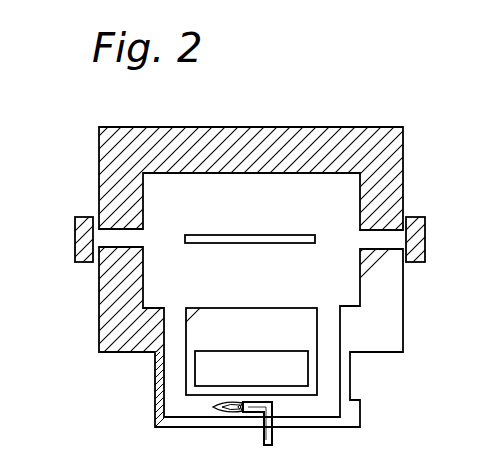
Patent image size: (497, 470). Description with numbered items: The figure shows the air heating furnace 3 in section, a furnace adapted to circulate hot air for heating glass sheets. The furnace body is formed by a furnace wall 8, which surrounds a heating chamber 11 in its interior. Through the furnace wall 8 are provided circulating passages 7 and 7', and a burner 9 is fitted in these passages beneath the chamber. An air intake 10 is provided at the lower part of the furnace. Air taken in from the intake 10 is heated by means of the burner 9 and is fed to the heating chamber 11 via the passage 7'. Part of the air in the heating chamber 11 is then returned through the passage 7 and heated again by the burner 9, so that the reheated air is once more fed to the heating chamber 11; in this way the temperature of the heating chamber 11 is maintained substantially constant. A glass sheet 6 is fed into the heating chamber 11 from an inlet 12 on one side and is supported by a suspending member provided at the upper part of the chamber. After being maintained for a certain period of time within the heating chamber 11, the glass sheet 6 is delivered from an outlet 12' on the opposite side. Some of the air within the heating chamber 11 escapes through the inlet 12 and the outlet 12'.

The air heating furnace 3 is at (338, 127).
The furnace wall 8 is at (279, 140).
The heating chamber 11 is at (345, 188).
The glass sheet 6 is at (215, 236).
The inlet 12 is at (87, 217).
The outlet 12' is at (424, 256).
The circulating passage 7 is at (251, 337).
The circulating passage 7' is at (143, 389).
The air intake 10 is at (362, 416).
The burner 9 is at (220, 428).